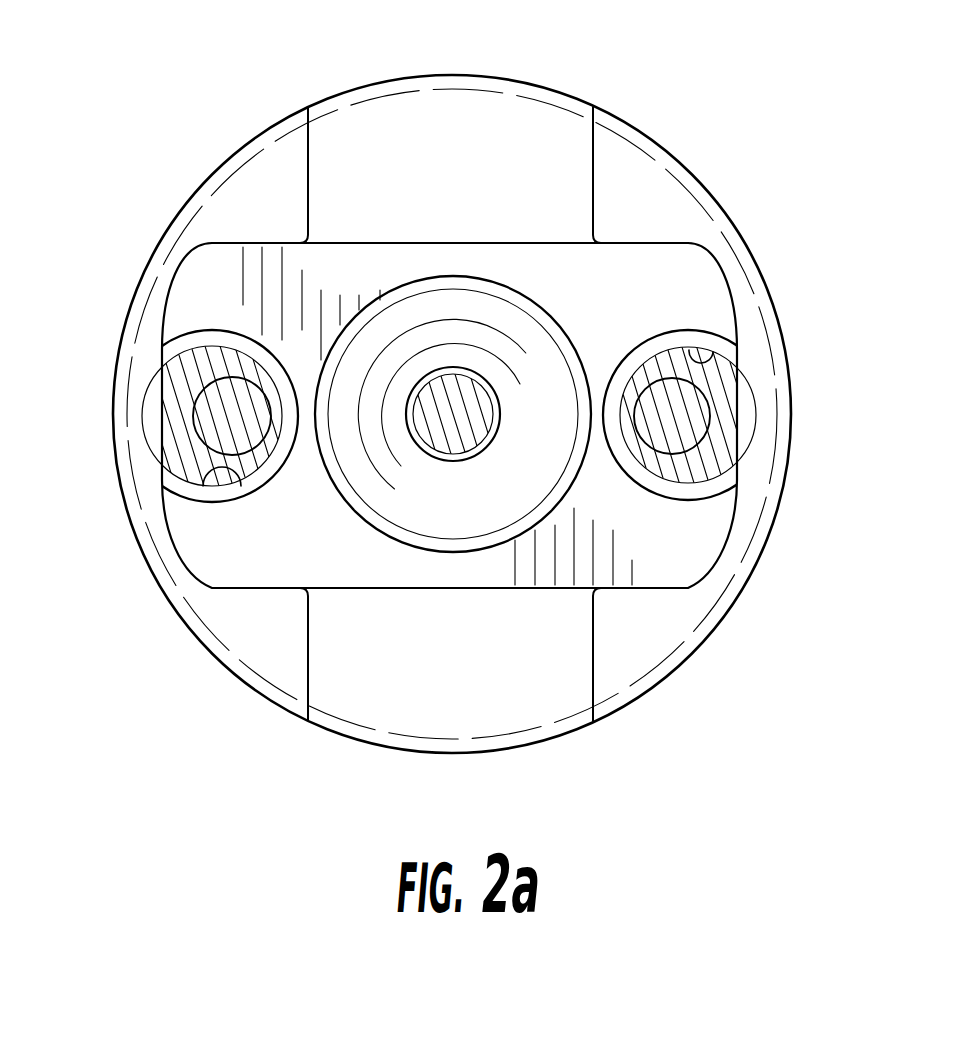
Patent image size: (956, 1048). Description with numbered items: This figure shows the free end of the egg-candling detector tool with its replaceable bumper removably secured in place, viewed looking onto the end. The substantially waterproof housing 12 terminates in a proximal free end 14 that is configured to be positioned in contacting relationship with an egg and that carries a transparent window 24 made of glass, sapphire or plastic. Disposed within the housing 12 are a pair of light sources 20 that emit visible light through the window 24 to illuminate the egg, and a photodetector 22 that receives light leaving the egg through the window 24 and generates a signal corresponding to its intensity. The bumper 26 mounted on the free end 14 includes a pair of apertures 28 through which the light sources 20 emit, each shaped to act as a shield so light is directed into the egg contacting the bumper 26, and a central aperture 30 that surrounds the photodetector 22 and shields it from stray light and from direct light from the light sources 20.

The housing 12 is at (287, 112).
The free end 14 is at (258, 176).
The light sources 20 is at (222, 426).
The photodetector 22 is at (452, 461).
The transparent window 24 is at (163, 492).
The bumper 26 is at (630, 278).
The apertures 28 is at (255, 490).
The aperture 30 is at (482, 513).